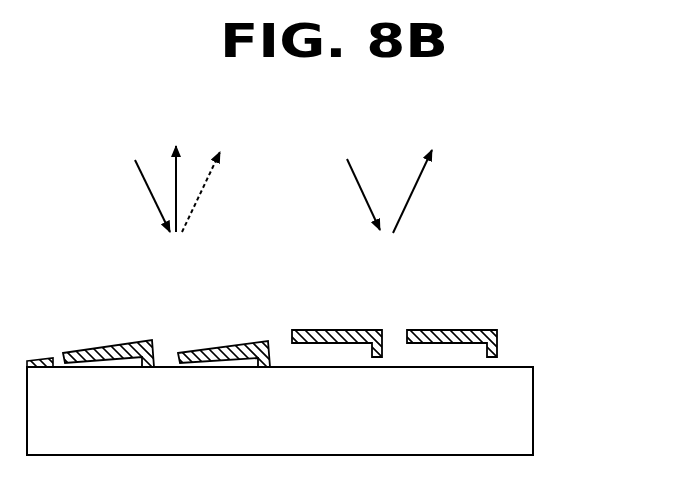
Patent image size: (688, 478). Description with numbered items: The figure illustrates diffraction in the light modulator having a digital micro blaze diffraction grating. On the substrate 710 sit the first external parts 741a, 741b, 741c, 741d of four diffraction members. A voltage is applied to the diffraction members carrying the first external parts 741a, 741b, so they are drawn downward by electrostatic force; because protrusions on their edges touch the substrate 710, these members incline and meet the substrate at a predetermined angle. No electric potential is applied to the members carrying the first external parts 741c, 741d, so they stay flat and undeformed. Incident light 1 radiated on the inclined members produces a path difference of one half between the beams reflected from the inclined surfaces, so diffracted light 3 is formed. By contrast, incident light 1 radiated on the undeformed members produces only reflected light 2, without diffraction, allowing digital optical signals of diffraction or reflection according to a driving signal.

The substrate 710 is at (525, 412).
The first external part 741a is at (103, 348).
The first external part 741b is at (220, 345).
The first external part 741c is at (337, 332).
The first external part 741d is at (450, 332).
The incident light 1 is at (253, 181).
The reflected light 2 is at (417, 179).
The diffracted light 3 is at (194, 174).